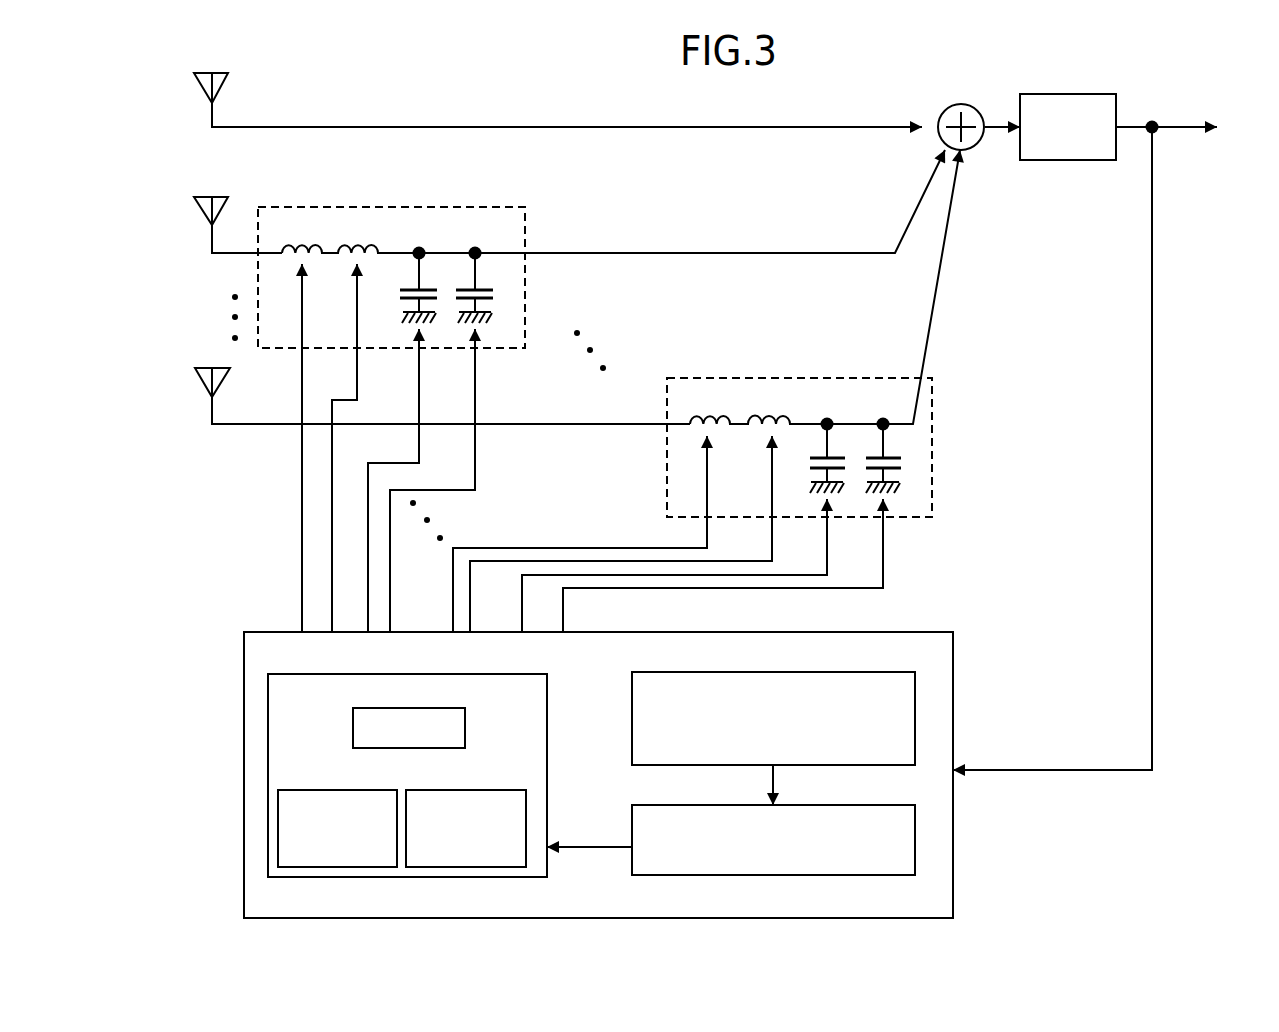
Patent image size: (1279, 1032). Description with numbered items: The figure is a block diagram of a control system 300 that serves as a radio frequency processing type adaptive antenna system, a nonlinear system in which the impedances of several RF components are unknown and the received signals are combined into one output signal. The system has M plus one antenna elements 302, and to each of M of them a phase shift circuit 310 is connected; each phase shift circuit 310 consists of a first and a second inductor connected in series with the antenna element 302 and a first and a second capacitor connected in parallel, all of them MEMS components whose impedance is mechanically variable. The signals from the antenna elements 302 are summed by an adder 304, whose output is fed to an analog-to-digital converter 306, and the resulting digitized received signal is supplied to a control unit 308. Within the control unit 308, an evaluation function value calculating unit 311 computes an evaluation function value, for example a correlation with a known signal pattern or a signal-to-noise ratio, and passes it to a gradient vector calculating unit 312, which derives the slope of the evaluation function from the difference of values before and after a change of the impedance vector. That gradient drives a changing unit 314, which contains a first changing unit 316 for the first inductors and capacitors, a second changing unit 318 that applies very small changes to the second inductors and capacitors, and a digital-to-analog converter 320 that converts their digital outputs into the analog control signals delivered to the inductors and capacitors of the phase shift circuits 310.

The control system 300 is at (163, 100).
The antenna element 302 is at (213, 120).
The adder 304 is at (968, 104).
The analog-to-digital converter 306 is at (1086, 94).
The control unit 308 is at (915, 632).
The phase shift circuit 310 is at (477, 207).
The evaluation function value calculating unit 311 is at (833, 672).
The gradient vector calculating unit 312 is at (830, 805).
The changing unit 314 is at (532, 674).
The first changing unit 316 is at (345, 790).
The second changing unit 318 is at (473, 790).
The digital-to-analog converter 320 is at (467, 723).